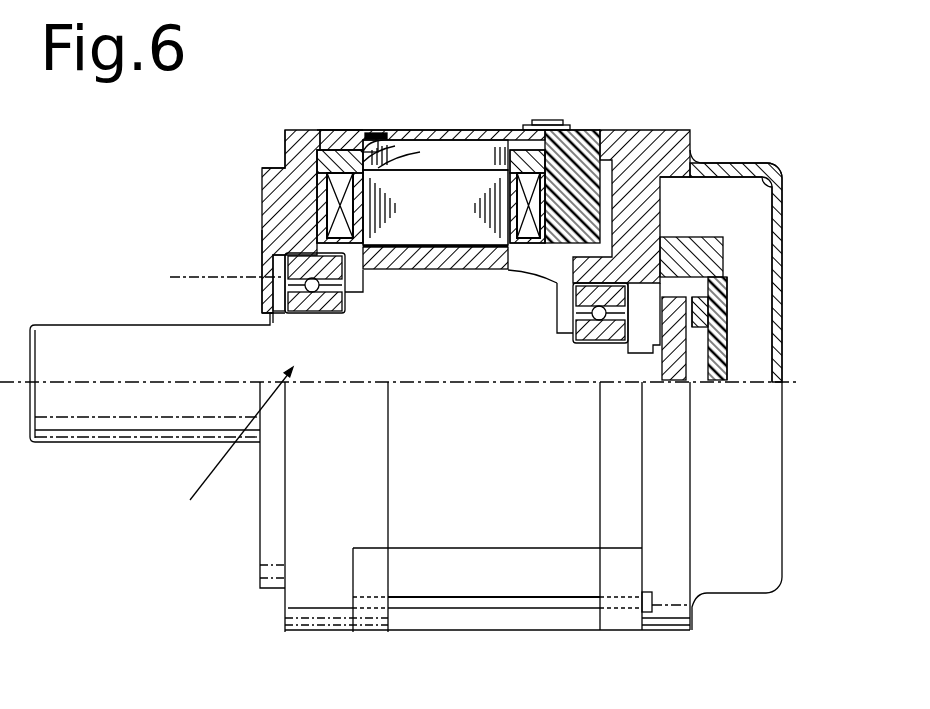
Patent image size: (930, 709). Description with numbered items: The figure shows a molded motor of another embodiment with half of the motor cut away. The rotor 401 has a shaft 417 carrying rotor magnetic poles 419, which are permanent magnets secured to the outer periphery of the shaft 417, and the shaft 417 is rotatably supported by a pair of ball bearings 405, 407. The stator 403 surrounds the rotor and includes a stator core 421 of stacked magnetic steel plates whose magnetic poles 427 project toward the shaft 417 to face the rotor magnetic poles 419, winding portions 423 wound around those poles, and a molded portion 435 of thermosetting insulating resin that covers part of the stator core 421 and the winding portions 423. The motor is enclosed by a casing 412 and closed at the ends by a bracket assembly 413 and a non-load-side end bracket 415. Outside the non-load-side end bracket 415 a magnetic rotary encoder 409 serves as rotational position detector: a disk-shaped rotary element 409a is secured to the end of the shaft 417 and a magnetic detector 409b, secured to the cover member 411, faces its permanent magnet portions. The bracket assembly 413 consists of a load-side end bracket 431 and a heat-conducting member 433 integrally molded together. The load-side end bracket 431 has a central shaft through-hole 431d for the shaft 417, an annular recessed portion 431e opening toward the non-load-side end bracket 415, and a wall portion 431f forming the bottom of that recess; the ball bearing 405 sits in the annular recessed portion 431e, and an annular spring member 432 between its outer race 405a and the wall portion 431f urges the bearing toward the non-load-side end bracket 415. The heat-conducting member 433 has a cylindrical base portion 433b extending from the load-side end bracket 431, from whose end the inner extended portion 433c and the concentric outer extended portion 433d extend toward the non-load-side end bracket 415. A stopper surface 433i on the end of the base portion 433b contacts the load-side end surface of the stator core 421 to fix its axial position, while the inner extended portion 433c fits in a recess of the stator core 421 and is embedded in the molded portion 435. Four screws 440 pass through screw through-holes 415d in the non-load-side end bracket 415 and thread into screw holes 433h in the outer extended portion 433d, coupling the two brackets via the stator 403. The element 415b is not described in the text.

The rotor 401 is at (400, 446).
The stator 403 is at (335, 150).
The ball bearing 405 is at (283, 322).
The outer race 405a is at (345, 293).
The ball bearing 407 is at (628, 293).
The magnetic rotary encoder 409 is at (852, 303).
The rotary element 409a is at (680, 345).
The magnetic detector 409b is at (700, 312).
The cover member 411 is at (707, 257).
The casing 412 is at (777, 217).
The bracket assembly 413 is at (286, 158).
The non-load-side end bracket 415 is at (636, 200).
The housing lip 415b is at (577, 268).
The screw through-hole 415d is at (625, 603).
The shaft 417 is at (335, 368).
The rotor magnetic poles 419 is at (418, 266).
The stator core 421 is at (440, 183).
The winding portions 423 is at (332, 195).
The magnetic poles 427 is at (453, 230).
The load-side end bracket 431 is at (287, 136).
The shaft through-hole 431d is at (262, 320).
The annular recessed portion 431e is at (272, 250).
The wall portion 431f is at (280, 279).
The annular spring member 432 is at (285, 270).
The heat-conducting member 433 is at (353, 135).
The base portion 433b is at (333, 135).
The inner extended portion 433c is at (397, 148).
The outer extended portion 433d is at (373, 133).
The screw hole 433h is at (373, 603).
The stopper surface 433i is at (433, 143).
The molded portion 435 is at (551, 120).
The screws 440 is at (513, 600).